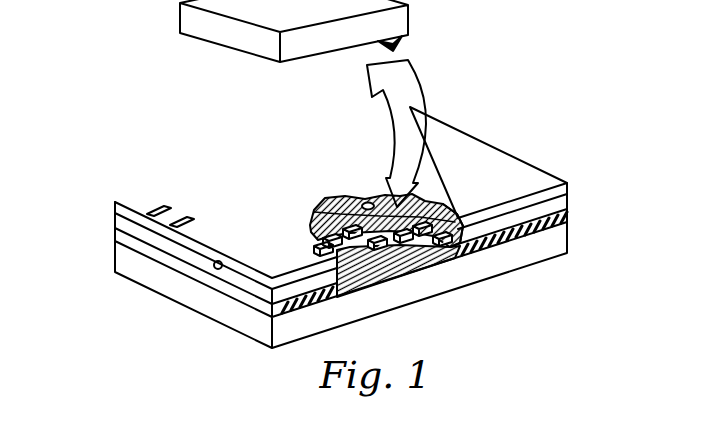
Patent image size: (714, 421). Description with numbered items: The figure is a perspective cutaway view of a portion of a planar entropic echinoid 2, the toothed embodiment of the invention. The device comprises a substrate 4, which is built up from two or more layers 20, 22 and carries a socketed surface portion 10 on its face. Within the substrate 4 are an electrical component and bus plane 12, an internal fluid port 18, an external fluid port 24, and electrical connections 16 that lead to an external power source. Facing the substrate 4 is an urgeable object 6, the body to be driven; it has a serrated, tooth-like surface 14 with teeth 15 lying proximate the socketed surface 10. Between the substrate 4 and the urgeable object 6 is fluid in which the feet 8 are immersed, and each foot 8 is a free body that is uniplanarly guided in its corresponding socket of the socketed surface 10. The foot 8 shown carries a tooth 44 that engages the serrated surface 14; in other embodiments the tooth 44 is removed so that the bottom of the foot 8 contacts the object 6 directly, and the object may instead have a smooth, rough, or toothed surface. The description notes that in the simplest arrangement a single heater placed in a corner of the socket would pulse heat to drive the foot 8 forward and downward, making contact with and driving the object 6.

The entropic echinoid 2 is at (577, 305).
The substrate 4 is at (300, 243).
The urgeable object 6 is at (119, 268).
The foot 8 is at (250, 40).
The socketed surface portion 10 is at (424, 176).
The electrical component and bus plane 12 is at (322, 198).
The serrated surface 14 is at (447, 267).
The teeth 15 is at (450, 210).
The electrical connections 16 is at (182, 218).
The internal fluid port 18 is at (373, 196).
The layer 20 is at (115, 208).
The layer 22 is at (60, 198).
The external fluid port 24 is at (216, 269).
The tooth 44 is at (403, 42).